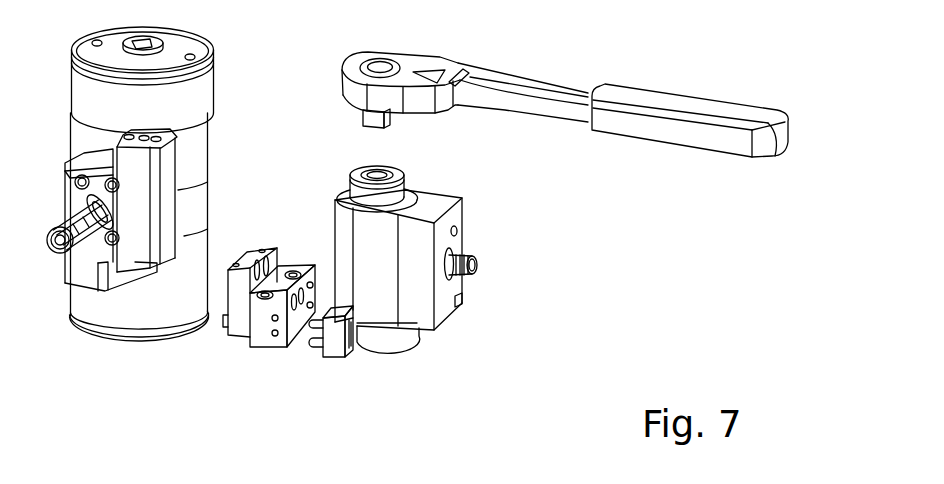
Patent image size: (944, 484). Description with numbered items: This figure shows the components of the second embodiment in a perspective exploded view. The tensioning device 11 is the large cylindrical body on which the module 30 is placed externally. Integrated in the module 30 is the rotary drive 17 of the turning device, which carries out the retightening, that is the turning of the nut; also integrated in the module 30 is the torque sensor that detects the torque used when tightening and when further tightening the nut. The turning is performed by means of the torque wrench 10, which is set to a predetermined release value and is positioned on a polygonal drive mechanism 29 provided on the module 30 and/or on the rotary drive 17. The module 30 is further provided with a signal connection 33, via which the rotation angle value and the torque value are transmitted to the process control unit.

The torque wrench 10 is at (575, 88).
The tensioning device 11 is at (222, 82).
The rotary drive 17 is at (328, 338).
The polygonal drive mechanism 29 is at (384, 178).
The module 30 is at (455, 316).
The signal connection 33 is at (483, 261).